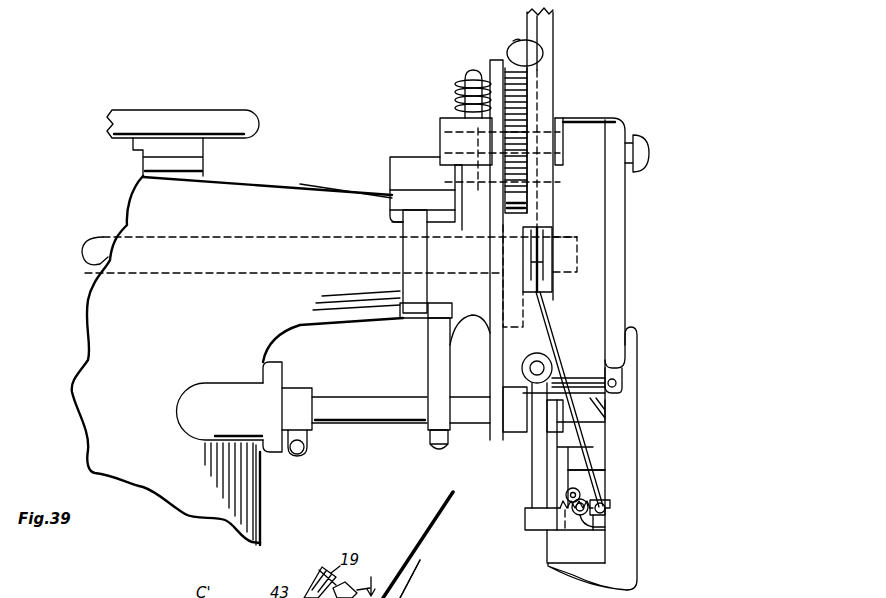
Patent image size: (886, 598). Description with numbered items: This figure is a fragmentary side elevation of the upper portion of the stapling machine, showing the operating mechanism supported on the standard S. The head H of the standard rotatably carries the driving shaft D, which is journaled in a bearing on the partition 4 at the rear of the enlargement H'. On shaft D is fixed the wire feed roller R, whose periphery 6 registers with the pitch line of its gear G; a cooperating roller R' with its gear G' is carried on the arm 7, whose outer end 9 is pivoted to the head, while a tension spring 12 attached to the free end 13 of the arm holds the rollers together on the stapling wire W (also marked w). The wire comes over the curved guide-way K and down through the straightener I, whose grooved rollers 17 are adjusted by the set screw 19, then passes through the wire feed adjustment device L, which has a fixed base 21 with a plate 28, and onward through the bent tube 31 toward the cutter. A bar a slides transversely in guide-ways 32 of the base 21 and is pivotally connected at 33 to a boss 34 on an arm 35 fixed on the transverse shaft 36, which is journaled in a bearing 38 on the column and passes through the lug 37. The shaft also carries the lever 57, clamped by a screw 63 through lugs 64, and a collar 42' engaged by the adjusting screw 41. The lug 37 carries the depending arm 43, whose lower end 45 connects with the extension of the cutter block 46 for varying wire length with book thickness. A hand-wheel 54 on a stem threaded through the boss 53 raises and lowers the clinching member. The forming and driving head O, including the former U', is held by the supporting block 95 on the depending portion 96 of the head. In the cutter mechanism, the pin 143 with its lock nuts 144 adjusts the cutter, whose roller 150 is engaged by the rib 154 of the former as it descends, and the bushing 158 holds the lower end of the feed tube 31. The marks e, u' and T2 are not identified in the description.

The hand-wheel 54 is at (207, 104).
The threaded boss 53 is at (196, 167).
The driving shaft D is at (103, 242).
The head H is at (267, 182).
The wire feed adjustment device L is at (402, 160).
The fixed base 21 is at (396, 177).
The arm 7 is at (448, 172).
The outer end of arm 9 is at (392, 207).
The plate 28 is at (392, 222).
The housing block e is at (440, 130).
The tension spring 12 is at (457, 96).
The free end of arm 13 is at (472, 78).
The set screw 19 is at (517, 47).
The stapling wire W is at (540, 22).
The guide-way K is at (542, 38).
The gear G' is at (546, 134).
The cooperating roller R' is at (556, 181).
The periphery of feed roller 6 is at (549, 110).
The enlargement of head H' is at (605, 243).
The wire feed roller R is at (597, 264).
The bent tube 31 is at (545, 320).
The bar a is at (420, 250).
The guide-ways 32 is at (402, 308).
The boss 34 is at (448, 300).
The gear G is at (486, 250).
The partition 4 is at (488, 333).
The adjusting screw 41 is at (522, 368).
The pivotal connection 33 is at (333, 340).
The bearing 38 is at (250, 392).
The lever 57 is at (302, 389).
The transverse shaft 36 is at (352, 395).
The arm 35 is at (434, 391).
The lugs 64 is at (303, 450).
The screw 63 is at (309, 450).
The standard S is at (247, 494).
The lug 37 is at (516, 432).
The depending arm 43 is at (533, 461).
The lower end of arm 45 is at (525, 507).
The cutter block 46 is at (557, 522).
The depending portion 96 is at (557, 549).
The supporting block 95 is at (628, 378).
The forming and driving head O is at (615, 418).
The collar 42' is at (620, 442).
The former U' is at (648, 458).
The rib 154 is at (605, 469).
The roller 150 is at (581, 488).
The bushing 158 is at (602, 505).
The lock nuts 144 is at (593, 520).
The pin 143 is at (603, 527).
The bottom wall u' is at (609, 576).
The table T2 is at (710, 589).
The stapling wire w is at (432, 520).
The straightener I is at (373, 578).
The grooved rollers 17 is at (402, 597).